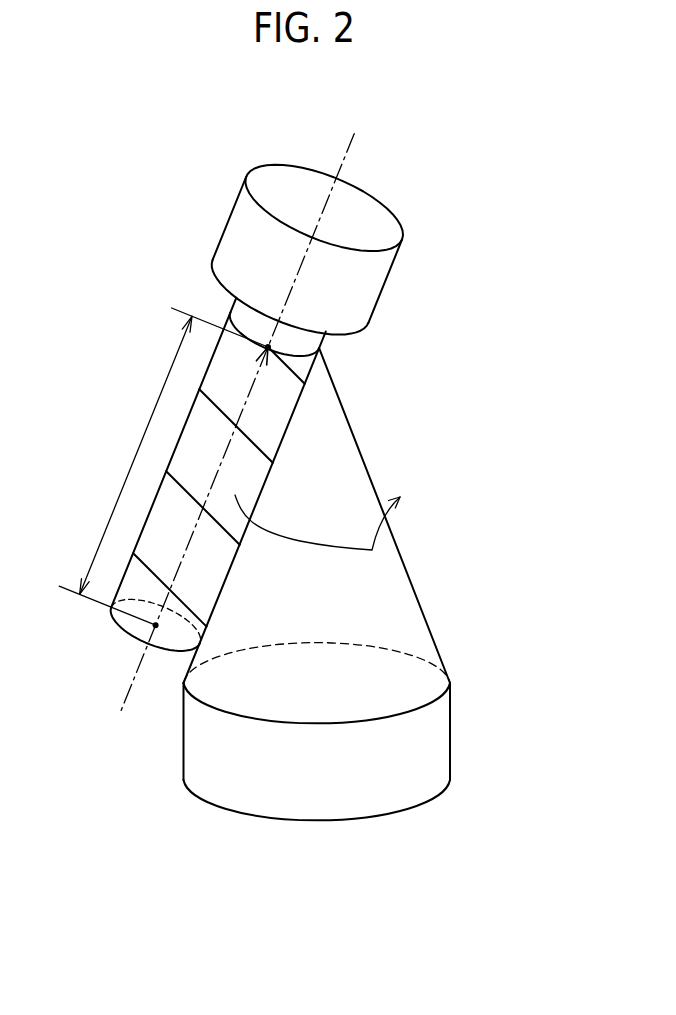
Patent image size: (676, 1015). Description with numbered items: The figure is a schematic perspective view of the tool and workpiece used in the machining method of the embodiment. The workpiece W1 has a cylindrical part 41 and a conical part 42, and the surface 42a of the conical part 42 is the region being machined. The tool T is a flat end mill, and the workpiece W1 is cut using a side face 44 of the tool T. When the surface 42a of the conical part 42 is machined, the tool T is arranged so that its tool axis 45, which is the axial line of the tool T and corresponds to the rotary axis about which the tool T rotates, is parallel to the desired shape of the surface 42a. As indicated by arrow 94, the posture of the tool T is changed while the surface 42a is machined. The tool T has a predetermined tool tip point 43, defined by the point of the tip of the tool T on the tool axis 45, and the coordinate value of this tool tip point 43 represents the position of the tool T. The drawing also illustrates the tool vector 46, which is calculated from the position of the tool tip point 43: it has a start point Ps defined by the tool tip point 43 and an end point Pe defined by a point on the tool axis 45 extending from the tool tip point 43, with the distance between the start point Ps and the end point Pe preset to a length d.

The cylindrical part 41 is at (430, 750).
The conical part 42 is at (354, 515).
The surface of the conical part 42a is at (393, 603).
The tool tip point 43 is at (242, 495).
The side face of the tool 44 is at (248, 488).
The tool axis 45 is at (358, 142).
The tool vector 46 is at (257, 380).
The arrow 94 is at (372, 550).
The tool T is at (242, 428).
The workpiece W1 is at (311, 732).
The end point Pe is at (268, 347).
The start point Ps is at (103, 657).
The length d is at (163, 466).